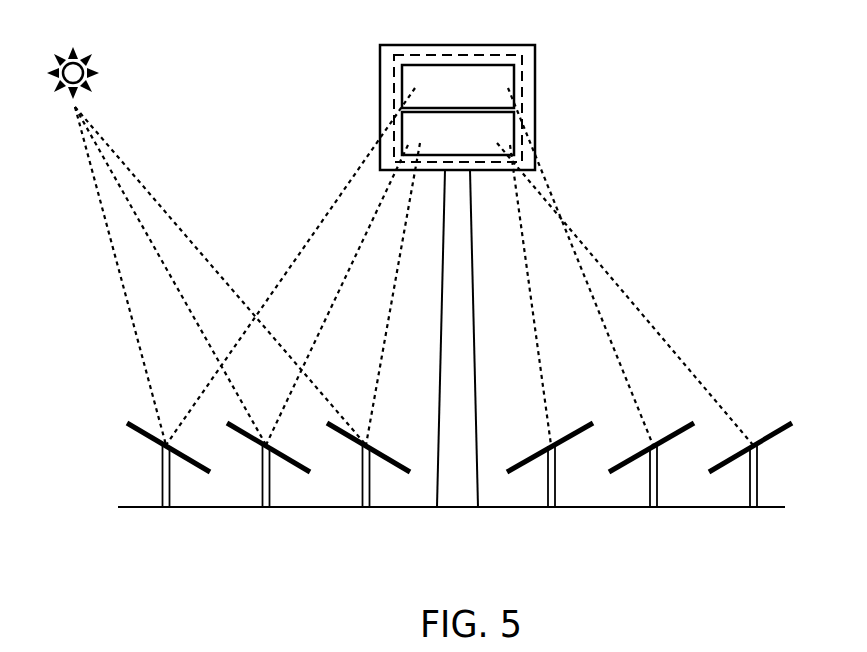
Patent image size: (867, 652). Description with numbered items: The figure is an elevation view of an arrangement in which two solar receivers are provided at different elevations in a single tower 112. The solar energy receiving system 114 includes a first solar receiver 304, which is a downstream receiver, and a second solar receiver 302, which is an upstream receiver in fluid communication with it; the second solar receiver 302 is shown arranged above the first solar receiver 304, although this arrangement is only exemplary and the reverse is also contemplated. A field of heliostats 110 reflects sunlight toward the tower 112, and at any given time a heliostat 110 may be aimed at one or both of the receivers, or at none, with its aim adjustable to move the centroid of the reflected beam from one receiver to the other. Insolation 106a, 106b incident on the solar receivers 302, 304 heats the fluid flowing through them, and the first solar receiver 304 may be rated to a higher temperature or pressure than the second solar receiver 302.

The insolation 106a is at (313, 266).
The insolation 106b is at (493, 266).
The heliostat 110 is at (458, 505).
The tower 112 is at (521, 97).
The solar energy receiving system 114 is at (493, 93).
The second solar receiver 302 is at (458, 86).
The first solar receiver 304 is at (458, 133).